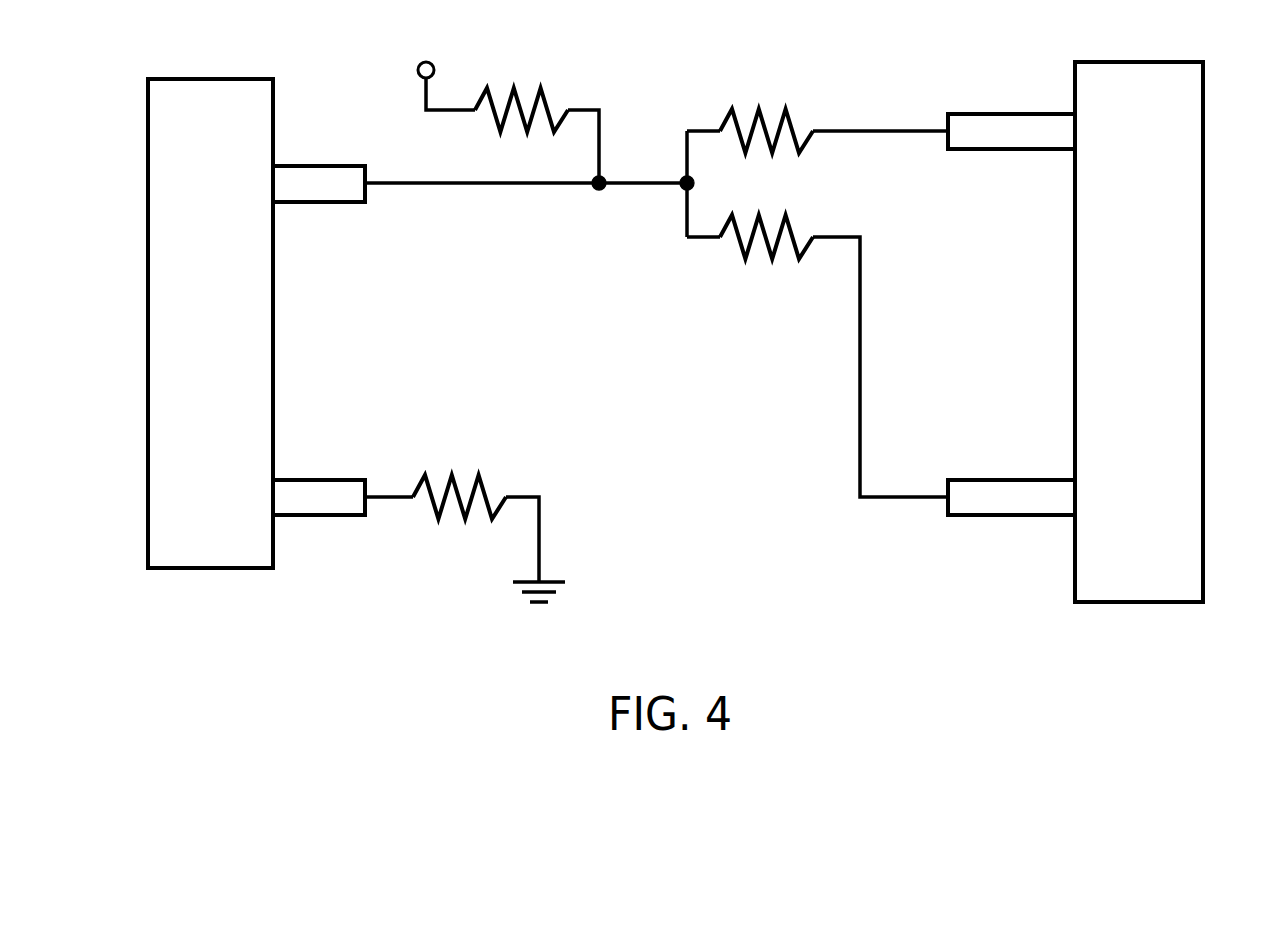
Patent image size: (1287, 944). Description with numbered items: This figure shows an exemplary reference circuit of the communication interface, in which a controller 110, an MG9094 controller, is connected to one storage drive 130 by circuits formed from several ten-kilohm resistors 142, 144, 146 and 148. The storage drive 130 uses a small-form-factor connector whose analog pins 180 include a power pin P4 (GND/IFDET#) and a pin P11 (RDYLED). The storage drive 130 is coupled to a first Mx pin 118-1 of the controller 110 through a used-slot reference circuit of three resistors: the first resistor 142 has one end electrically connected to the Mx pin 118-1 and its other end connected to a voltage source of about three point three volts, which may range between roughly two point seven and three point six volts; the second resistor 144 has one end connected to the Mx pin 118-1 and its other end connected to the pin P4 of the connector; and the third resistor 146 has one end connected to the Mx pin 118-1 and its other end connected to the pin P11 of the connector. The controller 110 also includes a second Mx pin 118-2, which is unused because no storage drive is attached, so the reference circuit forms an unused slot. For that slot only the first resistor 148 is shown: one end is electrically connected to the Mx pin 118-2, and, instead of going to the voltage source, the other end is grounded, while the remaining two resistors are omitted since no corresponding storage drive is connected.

The controller 110 is at (187, 79).
The first Mx pin 118-1 is at (309, 166).
The second Mx pin 118-2 is at (303, 480).
The storage drive 130 is at (1127, 62).
The first 10K ohm resistor 142 is at (523, 83).
The second 10K ohm resistor 144 is at (768, 97).
The third 10K ohm resistor 146 is at (790, 220).
The first 10K ohm resistor 148 is at (460, 475).
The analog pins 180 is at (1007, 114).